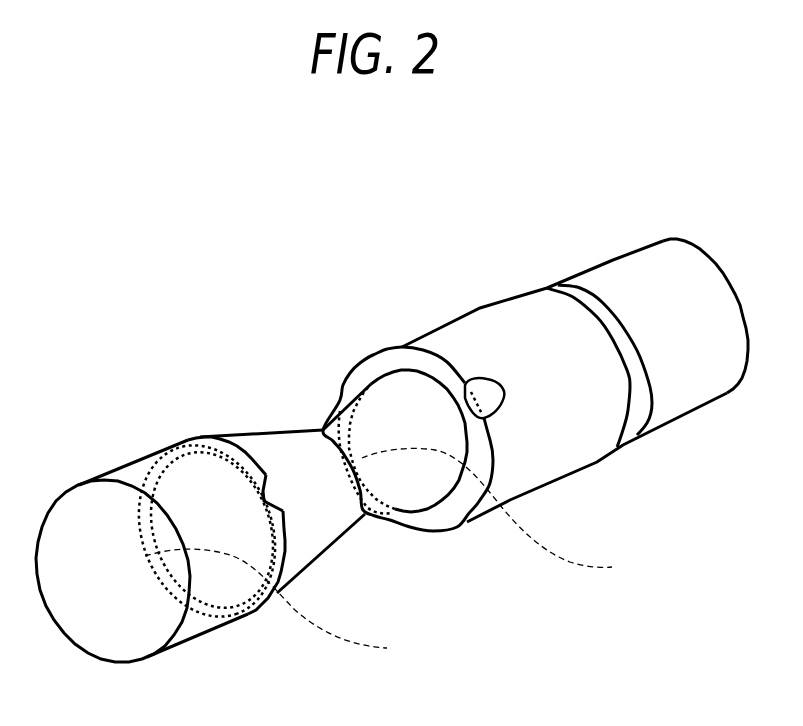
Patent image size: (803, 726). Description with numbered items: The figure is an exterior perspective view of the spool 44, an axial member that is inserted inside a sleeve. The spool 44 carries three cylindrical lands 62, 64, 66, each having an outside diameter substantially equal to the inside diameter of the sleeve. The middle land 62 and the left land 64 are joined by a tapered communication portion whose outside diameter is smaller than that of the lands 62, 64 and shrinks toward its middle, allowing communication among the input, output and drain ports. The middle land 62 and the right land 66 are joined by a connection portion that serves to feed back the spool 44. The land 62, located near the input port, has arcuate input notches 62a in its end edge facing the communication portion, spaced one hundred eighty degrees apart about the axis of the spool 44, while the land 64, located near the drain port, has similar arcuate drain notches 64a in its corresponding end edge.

The spool 44 is at (268, 294).
The land 62 is at (449, 328).
The input notches 62a is at (486, 417).
The land 64 is at (124, 469).
The drain notches 64a is at (265, 500).
The land 66 is at (610, 263).